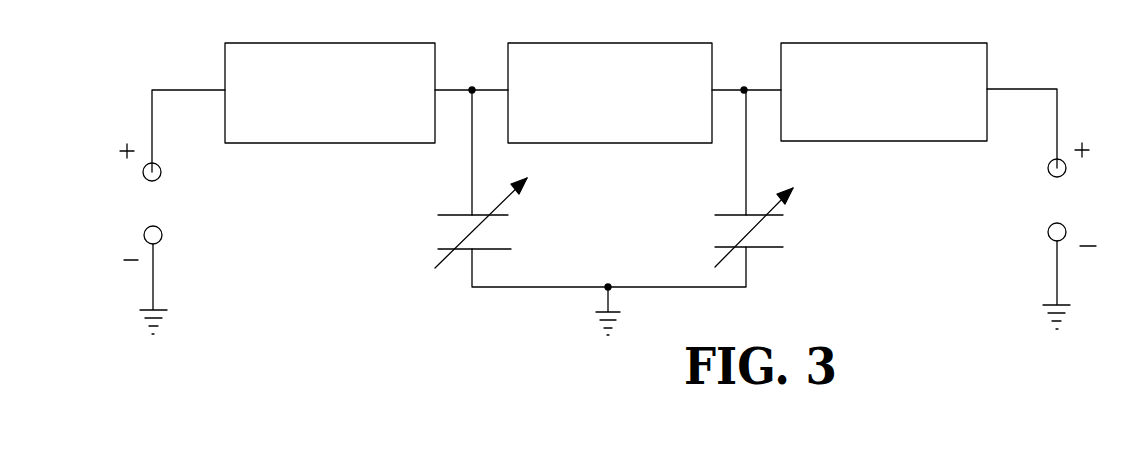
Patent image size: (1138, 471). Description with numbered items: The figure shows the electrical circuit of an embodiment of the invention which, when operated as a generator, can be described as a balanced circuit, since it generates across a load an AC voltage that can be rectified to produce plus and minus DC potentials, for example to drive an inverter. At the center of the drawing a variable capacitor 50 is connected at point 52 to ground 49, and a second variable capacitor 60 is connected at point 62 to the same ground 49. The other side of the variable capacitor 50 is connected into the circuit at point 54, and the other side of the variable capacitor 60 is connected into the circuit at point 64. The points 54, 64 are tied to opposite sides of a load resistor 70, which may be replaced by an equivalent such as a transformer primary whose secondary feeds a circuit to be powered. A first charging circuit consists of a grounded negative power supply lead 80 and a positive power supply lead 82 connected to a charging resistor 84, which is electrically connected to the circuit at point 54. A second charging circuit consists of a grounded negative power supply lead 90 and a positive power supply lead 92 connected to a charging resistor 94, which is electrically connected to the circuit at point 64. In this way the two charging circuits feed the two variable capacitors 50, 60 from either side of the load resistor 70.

The ground 49 is at (607, 300).
The variable capacitor 50 is at (471, 234).
The point 52 is at (466, 256).
The point 54 is at (472, 211).
The variable capacitor 60 is at (765, 231).
The point 62 is at (748, 250).
The point 64 is at (744, 211).
The load resistor 70 is at (585, 143).
The grounded negative power supply lead 80 is at (162, 235).
The positive power supply lead 82 is at (161, 172).
The charging resistor 84 is at (338, 143).
The grounded negative power supply lead 90 is at (1048, 236).
The positive power supply lead 92 is at (1048, 172).
The charging resistor 94 is at (905, 141).